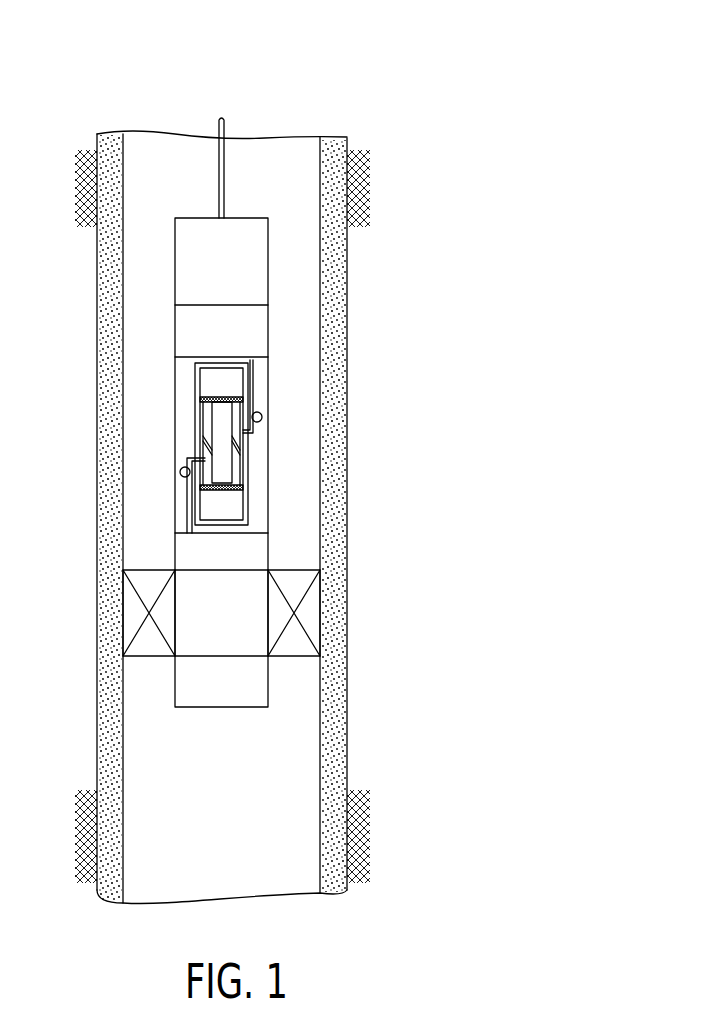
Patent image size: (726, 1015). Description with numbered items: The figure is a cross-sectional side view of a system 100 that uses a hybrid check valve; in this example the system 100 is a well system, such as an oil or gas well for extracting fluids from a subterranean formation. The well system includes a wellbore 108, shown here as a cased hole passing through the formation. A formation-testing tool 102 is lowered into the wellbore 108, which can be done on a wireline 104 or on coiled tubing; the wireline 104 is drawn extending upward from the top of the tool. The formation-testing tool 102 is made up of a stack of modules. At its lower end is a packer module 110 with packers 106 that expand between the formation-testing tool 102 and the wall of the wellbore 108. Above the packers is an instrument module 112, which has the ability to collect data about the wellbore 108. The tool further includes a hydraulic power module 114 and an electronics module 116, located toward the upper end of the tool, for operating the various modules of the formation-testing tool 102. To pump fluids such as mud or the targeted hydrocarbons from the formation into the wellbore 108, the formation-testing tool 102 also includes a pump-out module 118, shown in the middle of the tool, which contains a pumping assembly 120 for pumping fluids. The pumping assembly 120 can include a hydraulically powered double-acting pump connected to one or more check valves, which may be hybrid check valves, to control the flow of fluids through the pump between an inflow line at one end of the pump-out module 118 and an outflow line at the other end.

The system 100 is at (338, 86).
The formation-testing tool 102 is at (175, 295).
The wireline 104 is at (218, 126).
The packers 106 is at (312, 623).
The wellbore 108 is at (123, 503).
The packer module 110 is at (252, 683).
The instrument module 112 is at (195, 555).
The hydraulic power module 114 is at (249, 338).
The electronics module 116 is at (248, 277).
The pump-out module 118 is at (270, 496).
The pumping assembly 120 is at (245, 445).